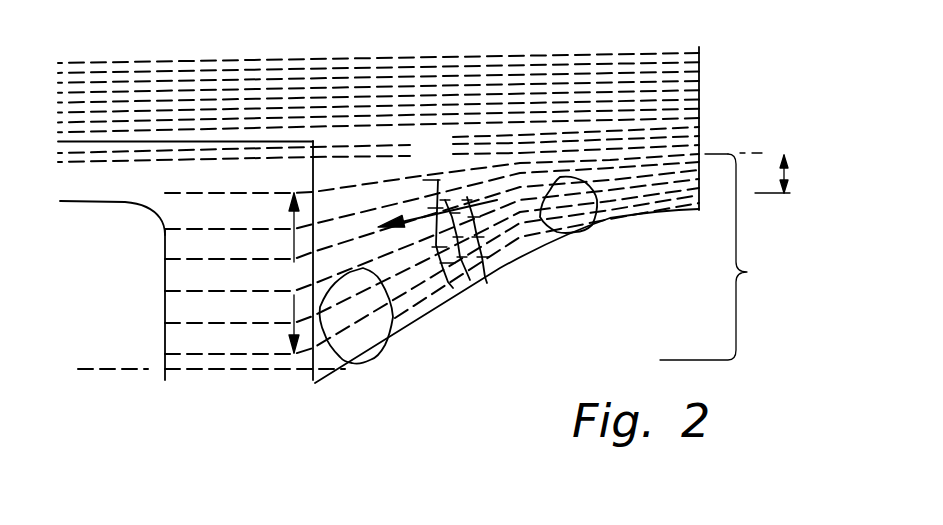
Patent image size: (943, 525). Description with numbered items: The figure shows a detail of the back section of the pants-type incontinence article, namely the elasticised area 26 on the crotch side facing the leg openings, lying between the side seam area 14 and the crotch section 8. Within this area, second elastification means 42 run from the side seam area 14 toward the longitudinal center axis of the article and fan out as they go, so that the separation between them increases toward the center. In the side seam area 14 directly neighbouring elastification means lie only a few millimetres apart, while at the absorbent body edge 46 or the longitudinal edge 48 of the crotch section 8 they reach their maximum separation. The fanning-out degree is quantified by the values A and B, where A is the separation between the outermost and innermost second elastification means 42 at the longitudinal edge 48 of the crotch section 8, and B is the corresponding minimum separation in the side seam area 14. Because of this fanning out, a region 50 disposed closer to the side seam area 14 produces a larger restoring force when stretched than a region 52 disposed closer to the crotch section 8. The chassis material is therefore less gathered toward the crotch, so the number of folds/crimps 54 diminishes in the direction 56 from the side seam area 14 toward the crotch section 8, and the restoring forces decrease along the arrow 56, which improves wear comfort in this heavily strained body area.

The crotch section 8 is at (112, 197).
The side seam area 14 is at (700, 102).
The area on the crotch side facing the leg openings 26 is at (719, 257).
The second elastification means 42 is at (428, 270).
The absorbent body edge 46 is at (168, 337).
The longitudinal edge 48 is at (318, 357).
The region 50 is at (573, 228).
The region 52 is at (372, 342).
The folds/crimps 54 is at (487, 283).
The direction 56 is at (438, 180).
The maximum separation A is at (295, 273).
The minimum separation B is at (785, 172).